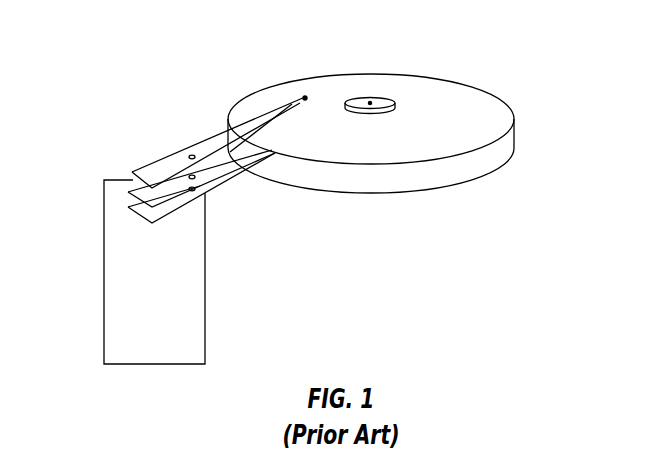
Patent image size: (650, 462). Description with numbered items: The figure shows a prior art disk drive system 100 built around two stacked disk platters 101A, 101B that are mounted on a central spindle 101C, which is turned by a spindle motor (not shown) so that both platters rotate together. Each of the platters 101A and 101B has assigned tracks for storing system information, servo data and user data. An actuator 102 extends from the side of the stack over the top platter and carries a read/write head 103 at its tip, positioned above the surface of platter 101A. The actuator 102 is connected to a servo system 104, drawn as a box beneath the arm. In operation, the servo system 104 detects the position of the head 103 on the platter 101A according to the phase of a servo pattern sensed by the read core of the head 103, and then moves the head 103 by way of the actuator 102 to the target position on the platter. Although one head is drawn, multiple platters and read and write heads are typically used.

The disk drive system 100 is at (122, 50).
The platter 101A is at (502, 100).
The platter 101B is at (502, 167).
The spindle 101C is at (370, 103).
The actuator 102 is at (180, 151).
The read/write head 103 is at (305, 97).
The servo system 104 is at (205, 337).